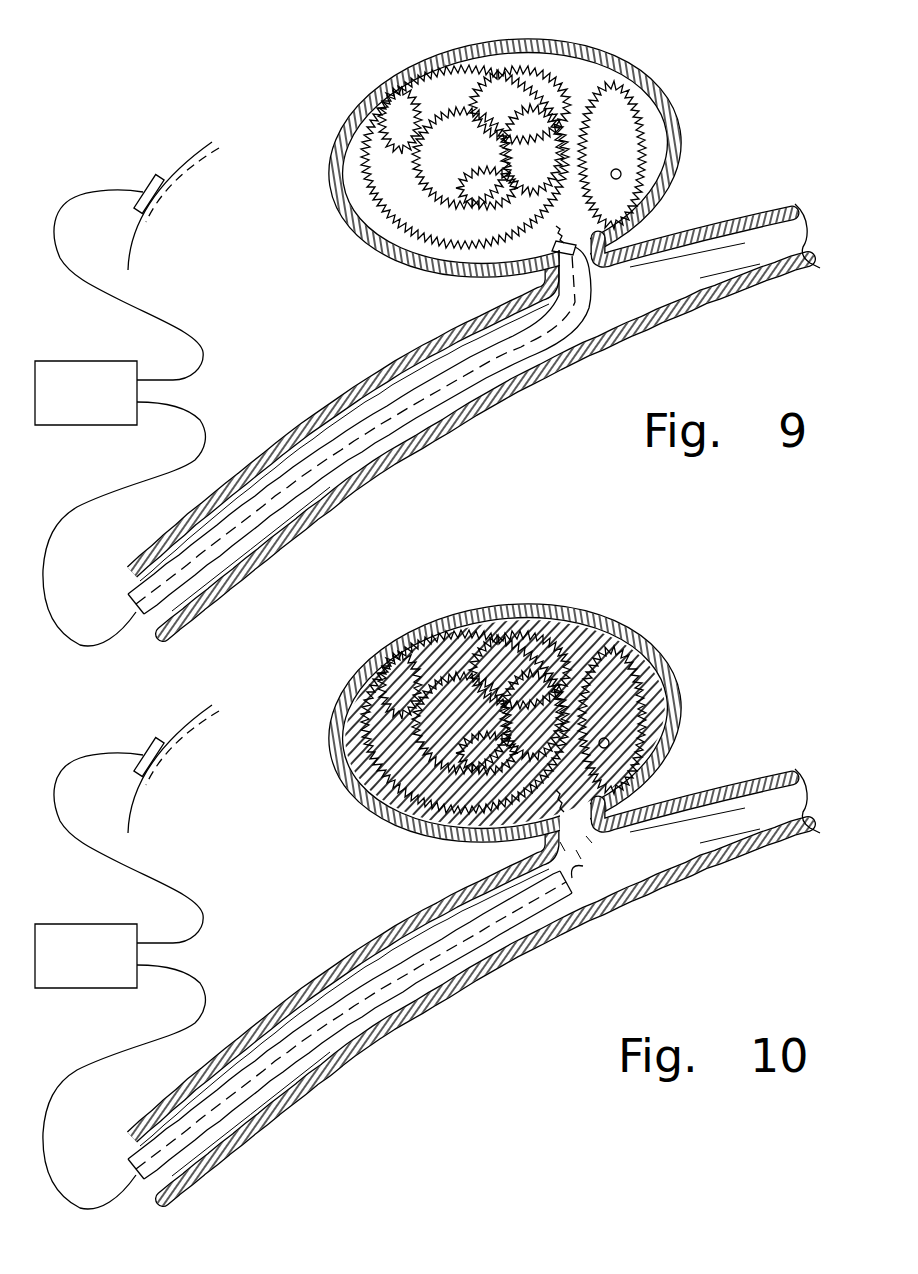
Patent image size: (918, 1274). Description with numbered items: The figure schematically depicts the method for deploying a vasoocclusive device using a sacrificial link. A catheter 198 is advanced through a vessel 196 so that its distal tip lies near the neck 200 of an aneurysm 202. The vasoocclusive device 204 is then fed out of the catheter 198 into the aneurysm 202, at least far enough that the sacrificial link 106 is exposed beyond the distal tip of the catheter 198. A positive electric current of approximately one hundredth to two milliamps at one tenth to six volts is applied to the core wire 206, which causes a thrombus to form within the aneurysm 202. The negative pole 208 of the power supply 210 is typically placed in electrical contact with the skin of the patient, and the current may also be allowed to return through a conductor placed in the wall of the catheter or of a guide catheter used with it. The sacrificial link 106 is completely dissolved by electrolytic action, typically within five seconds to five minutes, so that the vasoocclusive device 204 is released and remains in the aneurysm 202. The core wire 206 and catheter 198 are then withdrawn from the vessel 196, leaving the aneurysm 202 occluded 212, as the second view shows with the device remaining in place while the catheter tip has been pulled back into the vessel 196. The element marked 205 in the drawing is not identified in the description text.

In FIG. 9, the sacrificial link 106 is at (553, 253).
In FIG. 10, the sacrificial link 106 is at (600, 822).
In FIG. 9, the vessel 196 is at (328, 409).
In FIG. 10, the vessel 196 is at (322, 972).
In FIG. 9, the catheter 198 is at (401, 432).
In FIG. 10, the catheter 198 is at (518, 933).
In FIG. 9, the neck 200 is at (607, 251).
In FIG. 10, the neck 200 is at (709, 806).
In FIG. 9, the aneurysm 202 is at (618, 63).
In FIG. 10, the aneurysm 202 is at (578, 603).
In FIG. 9, the vasoocclusive device 204 is at (643, 108).
In FIG. 10, the vasoocclusive device 204 is at (620, 655).
In FIG. 9, the coil end 205 is at (621, 178).
In FIG. 10, the coil end 205 is at (610, 745).
In FIG. 9, the core wire 206 is at (289, 528).
In FIG. 10, the core wire 206 is at (362, 1032).
In FIG. 9, the negative pole 208 is at (186, 160).
In FIG. 10, the negative pole 208 is at (175, 737).
In FIG. 9, the power supply 210 is at (112, 407).
In FIG. 10, the power supply 210 is at (112, 970).
In FIG. 10, the occluded 212 is at (370, 780).